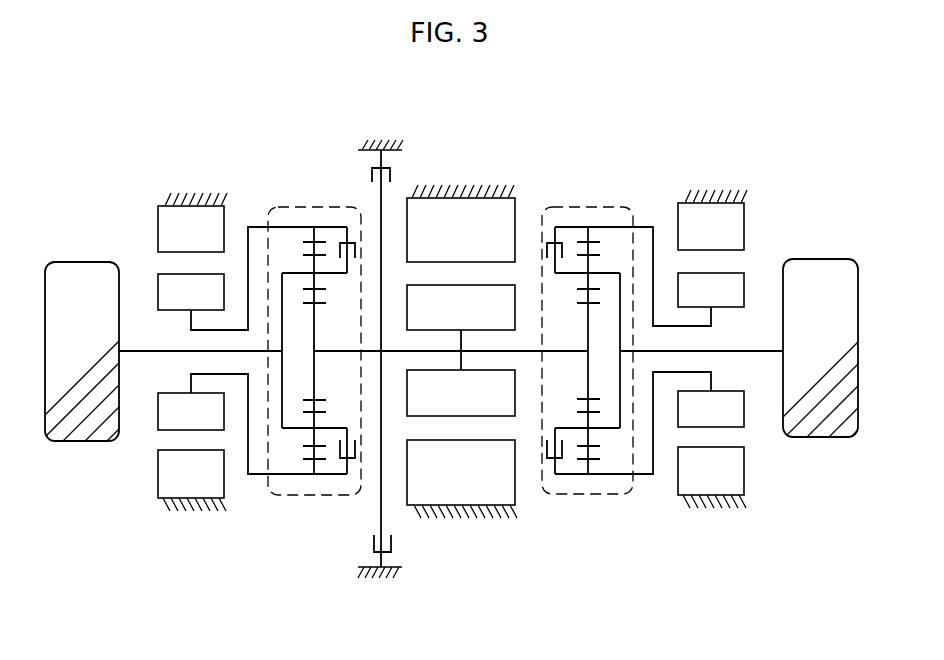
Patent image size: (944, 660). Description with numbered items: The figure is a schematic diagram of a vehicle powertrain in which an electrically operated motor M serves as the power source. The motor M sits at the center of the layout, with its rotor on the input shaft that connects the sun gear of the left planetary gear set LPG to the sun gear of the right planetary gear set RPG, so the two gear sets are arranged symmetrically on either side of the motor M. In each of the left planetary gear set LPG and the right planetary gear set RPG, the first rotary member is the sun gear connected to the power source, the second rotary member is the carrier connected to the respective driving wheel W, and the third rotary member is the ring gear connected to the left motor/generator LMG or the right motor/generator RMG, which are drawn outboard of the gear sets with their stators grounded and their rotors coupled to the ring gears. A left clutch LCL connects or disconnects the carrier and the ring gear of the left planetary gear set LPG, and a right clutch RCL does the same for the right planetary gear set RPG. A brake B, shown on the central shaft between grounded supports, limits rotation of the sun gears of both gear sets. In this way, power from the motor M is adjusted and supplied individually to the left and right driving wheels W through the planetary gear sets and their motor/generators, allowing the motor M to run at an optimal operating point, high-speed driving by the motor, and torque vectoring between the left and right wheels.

The driving wheels W is at (79, 262).
The left motor/generator LMG is at (199, 178).
The right motor/generator RMG is at (714, 178).
The motor M is at (465, 182).
The left planetary gear set LPG is at (287, 498).
The right planetary gear set RPG is at (588, 496).
The left clutch LCL is at (341, 445).
The right clutch RCL is at (553, 243).
The brake B is at (392, 542).